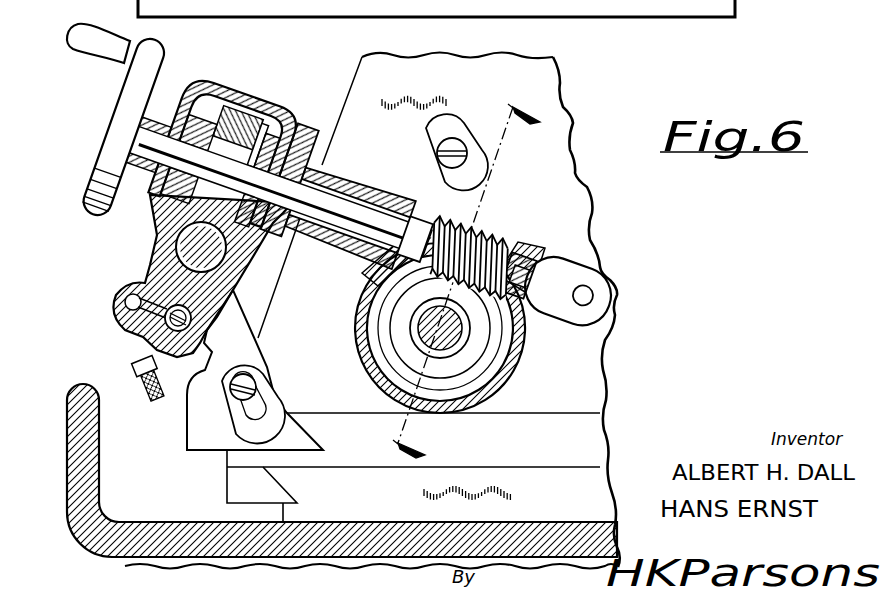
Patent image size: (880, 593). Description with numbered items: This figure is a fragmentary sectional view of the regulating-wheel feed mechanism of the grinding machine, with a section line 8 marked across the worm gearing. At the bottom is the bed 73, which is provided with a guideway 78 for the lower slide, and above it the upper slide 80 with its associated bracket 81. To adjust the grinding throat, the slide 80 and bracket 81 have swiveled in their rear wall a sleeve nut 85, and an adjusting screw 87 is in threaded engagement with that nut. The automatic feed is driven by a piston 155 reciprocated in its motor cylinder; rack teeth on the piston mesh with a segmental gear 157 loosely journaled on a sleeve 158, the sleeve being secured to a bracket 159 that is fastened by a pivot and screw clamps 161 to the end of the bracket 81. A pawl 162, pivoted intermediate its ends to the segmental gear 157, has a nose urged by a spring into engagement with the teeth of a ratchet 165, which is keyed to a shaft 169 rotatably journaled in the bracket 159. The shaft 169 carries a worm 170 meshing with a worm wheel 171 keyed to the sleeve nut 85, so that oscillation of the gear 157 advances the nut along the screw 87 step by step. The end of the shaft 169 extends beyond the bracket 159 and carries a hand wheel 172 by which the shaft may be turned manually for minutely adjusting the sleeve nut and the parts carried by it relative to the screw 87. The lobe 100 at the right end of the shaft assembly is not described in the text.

The bed 73 is at (100, 494).
The guideway 78 is at (280, 478).
The upper slide 80 is at (197, 427).
The bracket 81 is at (563, 88).
The sleeve nut 85 is at (425, 322).
The adjusting screw 87 is at (420, 336).
The pivot bracket 100 is at (580, 305).
The piston 155 is at (192, 247).
The segmental gear 157 is at (278, 100).
The sleeve 158 is at (288, 116).
The bracket 159 is at (250, 90).
The screw clamps 161 is at (252, 382).
The pawl 162 is at (258, 82).
The ratchet 165 is at (195, 238).
The shaft 169 is at (350, 197).
The worm 170 is at (510, 226).
The worm wheel 171 is at (392, 306).
The hand wheel 172 is at (161, 50).
The section line 8- 8 is at (466, 286).